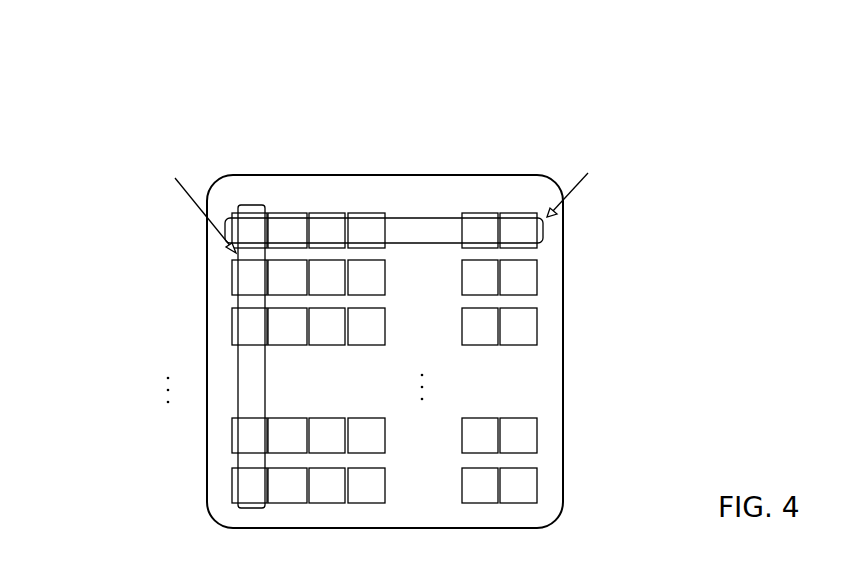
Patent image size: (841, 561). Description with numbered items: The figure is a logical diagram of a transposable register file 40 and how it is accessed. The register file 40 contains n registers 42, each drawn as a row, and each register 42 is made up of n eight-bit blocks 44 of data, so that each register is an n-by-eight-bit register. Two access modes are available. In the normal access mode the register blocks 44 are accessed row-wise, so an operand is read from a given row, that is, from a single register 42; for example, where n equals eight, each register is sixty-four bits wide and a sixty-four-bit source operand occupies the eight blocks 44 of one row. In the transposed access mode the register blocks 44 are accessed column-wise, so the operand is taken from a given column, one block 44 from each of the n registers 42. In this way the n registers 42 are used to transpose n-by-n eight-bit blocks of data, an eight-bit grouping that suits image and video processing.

The transposable register file 40 is at (612, 90).
The register 42 is at (585, 228).
The 8-bit block 44 is at (237, 124).